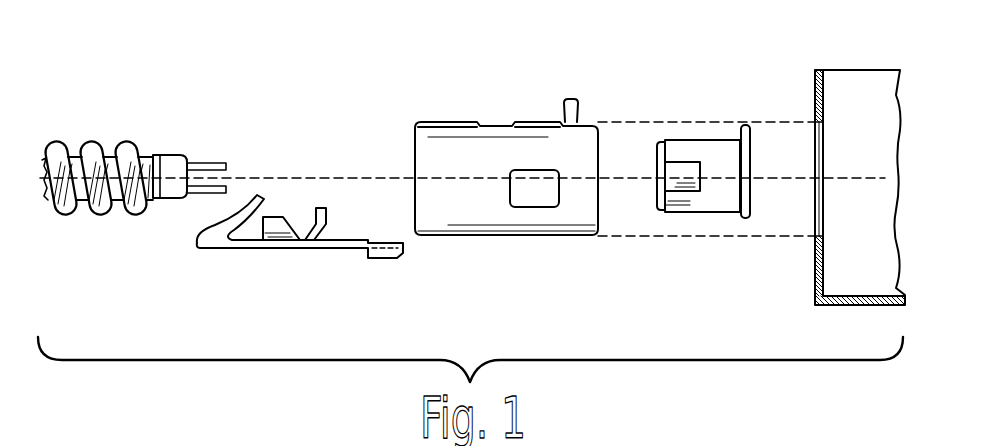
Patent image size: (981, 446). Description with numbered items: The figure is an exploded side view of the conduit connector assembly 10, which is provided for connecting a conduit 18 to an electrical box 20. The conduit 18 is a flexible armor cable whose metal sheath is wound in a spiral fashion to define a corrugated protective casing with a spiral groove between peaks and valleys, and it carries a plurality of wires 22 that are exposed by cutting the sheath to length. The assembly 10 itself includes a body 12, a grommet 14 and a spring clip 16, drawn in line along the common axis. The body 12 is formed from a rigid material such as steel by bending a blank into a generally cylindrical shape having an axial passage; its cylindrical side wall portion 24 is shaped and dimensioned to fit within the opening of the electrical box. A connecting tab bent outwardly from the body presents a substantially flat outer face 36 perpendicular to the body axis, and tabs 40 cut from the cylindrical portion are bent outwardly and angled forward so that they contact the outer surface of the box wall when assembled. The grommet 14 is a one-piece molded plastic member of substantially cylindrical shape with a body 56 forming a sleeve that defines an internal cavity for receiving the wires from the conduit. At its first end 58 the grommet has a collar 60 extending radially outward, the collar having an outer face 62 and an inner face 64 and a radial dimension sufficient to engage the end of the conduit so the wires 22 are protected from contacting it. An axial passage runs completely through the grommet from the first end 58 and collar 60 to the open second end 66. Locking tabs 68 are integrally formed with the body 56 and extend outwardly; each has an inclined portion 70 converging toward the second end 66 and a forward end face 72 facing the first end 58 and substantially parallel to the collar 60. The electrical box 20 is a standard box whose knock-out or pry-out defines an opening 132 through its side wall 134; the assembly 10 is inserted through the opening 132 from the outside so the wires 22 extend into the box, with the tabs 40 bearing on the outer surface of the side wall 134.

The conduit connector assembly 10 is at (408, 68).
The body 12 is at (462, 131).
The grommet 14 is at (707, 166).
The spring clip 16 is at (343, 248).
The conduit 18 is at (136, 220).
The electrical box 20 is at (820, 191).
The wires 22 is at (222, 163).
The cylindrical side wall portion 24 is at (418, 205).
The outer face 36 is at (570, 98).
The tabs 40 is at (527, 192).
The body 56 is at (679, 178).
The first end 58 is at (734, 216).
The collar 60 is at (782, 118).
The outer face 62 is at (769, 166).
The inner face 64 is at (730, 128).
The second end 66 is at (657, 206).
The locking tabs 68 is at (670, 165).
The inclined portion 70 is at (662, 166).
The forward end face 72 is at (701, 180).
The opening 132 is at (820, 190).
The side wall 134 is at (824, 97).